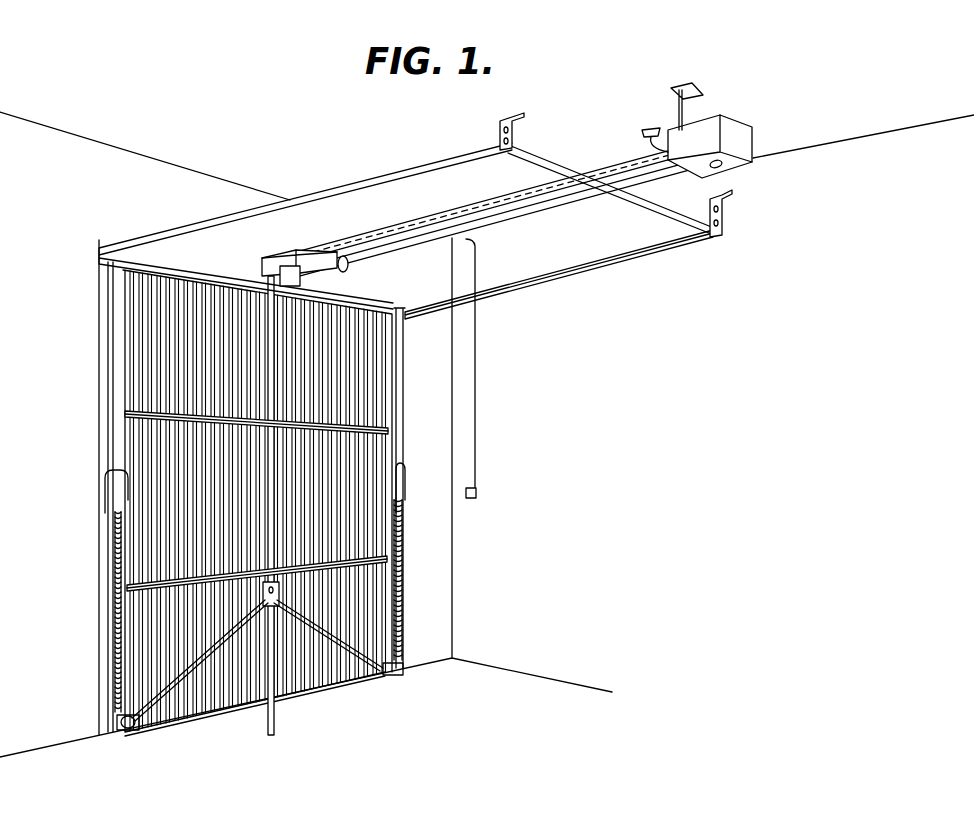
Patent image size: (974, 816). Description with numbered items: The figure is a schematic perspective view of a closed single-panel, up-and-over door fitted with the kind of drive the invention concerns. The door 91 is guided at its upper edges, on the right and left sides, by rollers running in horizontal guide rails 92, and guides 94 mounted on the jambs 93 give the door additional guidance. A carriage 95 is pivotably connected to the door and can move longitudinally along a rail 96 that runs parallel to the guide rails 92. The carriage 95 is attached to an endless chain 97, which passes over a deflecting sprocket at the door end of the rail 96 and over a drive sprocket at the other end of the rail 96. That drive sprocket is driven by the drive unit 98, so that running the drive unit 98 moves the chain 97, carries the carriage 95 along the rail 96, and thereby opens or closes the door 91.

The door 91 is at (320, 668).
The guide rails 92 is at (405, 170).
The jambs 93 is at (398, 383).
The guides 94 is at (104, 500).
The carriage 95 is at (351, 265).
The rail 96 is at (500, 215).
The endless chain 97 is at (464, 212).
The drive unit 98 is at (735, 166).